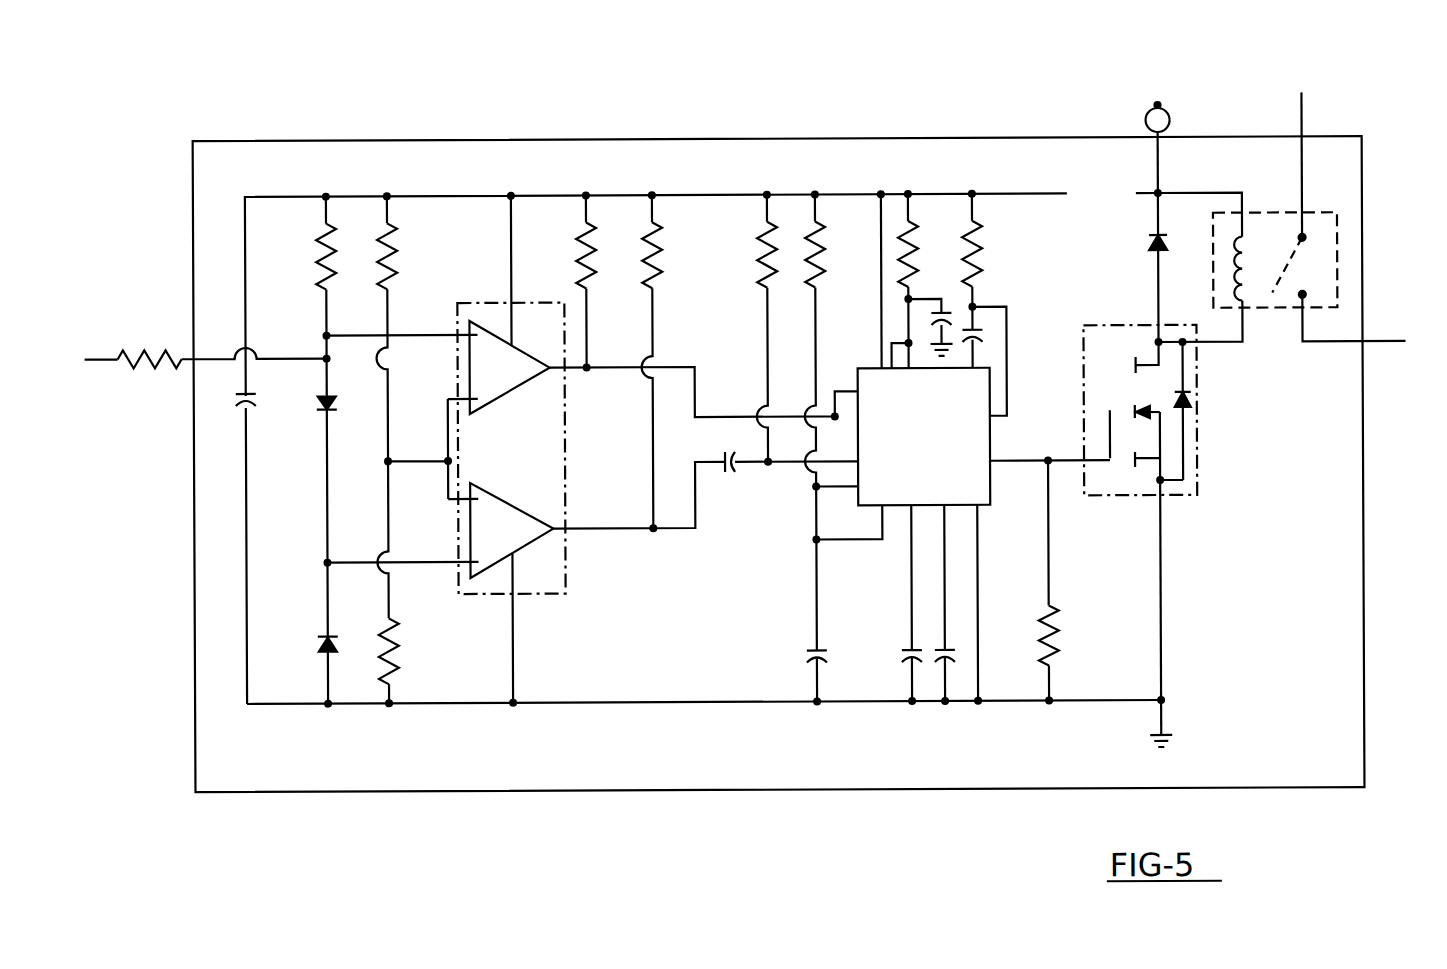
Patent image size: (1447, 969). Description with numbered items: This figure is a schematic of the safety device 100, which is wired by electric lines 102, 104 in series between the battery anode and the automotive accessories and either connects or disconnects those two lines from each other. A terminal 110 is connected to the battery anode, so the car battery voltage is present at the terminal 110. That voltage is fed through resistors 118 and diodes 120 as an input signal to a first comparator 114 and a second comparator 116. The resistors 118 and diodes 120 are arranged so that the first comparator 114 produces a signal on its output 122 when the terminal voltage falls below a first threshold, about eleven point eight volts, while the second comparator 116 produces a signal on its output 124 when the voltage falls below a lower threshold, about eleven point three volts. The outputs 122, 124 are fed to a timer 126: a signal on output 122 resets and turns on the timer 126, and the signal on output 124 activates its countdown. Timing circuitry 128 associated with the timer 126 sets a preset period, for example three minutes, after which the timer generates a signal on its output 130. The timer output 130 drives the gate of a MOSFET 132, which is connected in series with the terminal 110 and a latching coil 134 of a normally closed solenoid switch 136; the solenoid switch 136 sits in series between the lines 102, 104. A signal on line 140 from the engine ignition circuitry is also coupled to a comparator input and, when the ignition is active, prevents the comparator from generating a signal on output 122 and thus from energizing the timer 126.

The safety device 100 is at (1374, 474).
The electric line 102 is at (1303, 107).
The electric line 104 is at (1391, 342).
The terminal 110 is at (1147, 120).
The first comparator 114 is at (525, 343).
The second comparator 116 is at (533, 542).
The resistors 118 is at (372, 282).
The diodes 120 is at (322, 412).
The output of first comparator 122 is at (657, 363).
The output of second comparator 124 is at (670, 530).
The timer 126 is at (1050, 555).
The timing circuitry 128 is at (905, 652).
The timer output 130 is at (1065, 464).
The MOSFET 132 is at (1197, 407).
The latching coil 134 is at (1253, 240).
The solenoid switch 136 is at (1318, 250).
The line from ignition circuitry 140 is at (106, 357).